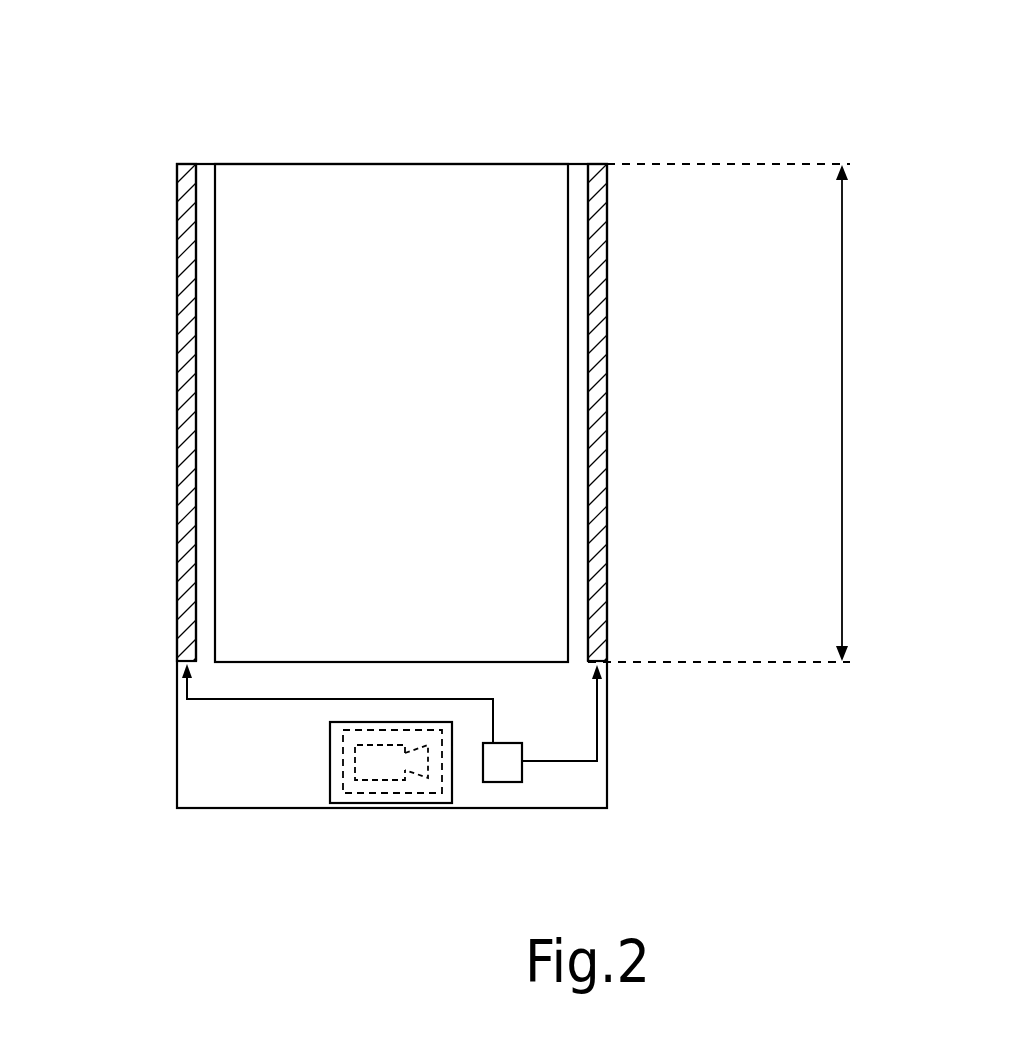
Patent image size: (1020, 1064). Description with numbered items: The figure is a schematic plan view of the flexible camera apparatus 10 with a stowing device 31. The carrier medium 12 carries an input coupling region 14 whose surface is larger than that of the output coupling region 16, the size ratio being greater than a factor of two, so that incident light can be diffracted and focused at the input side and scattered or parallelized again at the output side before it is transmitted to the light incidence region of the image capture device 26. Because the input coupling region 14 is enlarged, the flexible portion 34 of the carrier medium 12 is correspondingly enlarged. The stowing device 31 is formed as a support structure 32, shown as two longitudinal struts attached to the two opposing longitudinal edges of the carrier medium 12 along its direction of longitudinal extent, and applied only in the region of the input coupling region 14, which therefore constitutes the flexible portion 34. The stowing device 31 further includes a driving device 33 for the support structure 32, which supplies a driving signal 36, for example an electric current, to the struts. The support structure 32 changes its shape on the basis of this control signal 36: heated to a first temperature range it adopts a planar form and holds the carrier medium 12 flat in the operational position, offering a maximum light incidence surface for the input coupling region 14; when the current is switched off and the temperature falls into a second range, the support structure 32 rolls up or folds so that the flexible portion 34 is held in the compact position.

The camera apparatus 10 is at (266, 111).
The carrier medium 12 is at (567, 809).
The input coupling region 14 is at (430, 163).
The output coupling region 16 is at (333, 773).
The image capture device 26 is at (399, 795).
The stowing device 31 is at (165, 300).
The support structure 32 is at (176, 230).
The driving device 33 is at (500, 782).
The flexible portion 34 is at (843, 345).
The driving signal 36 is at (255, 700).